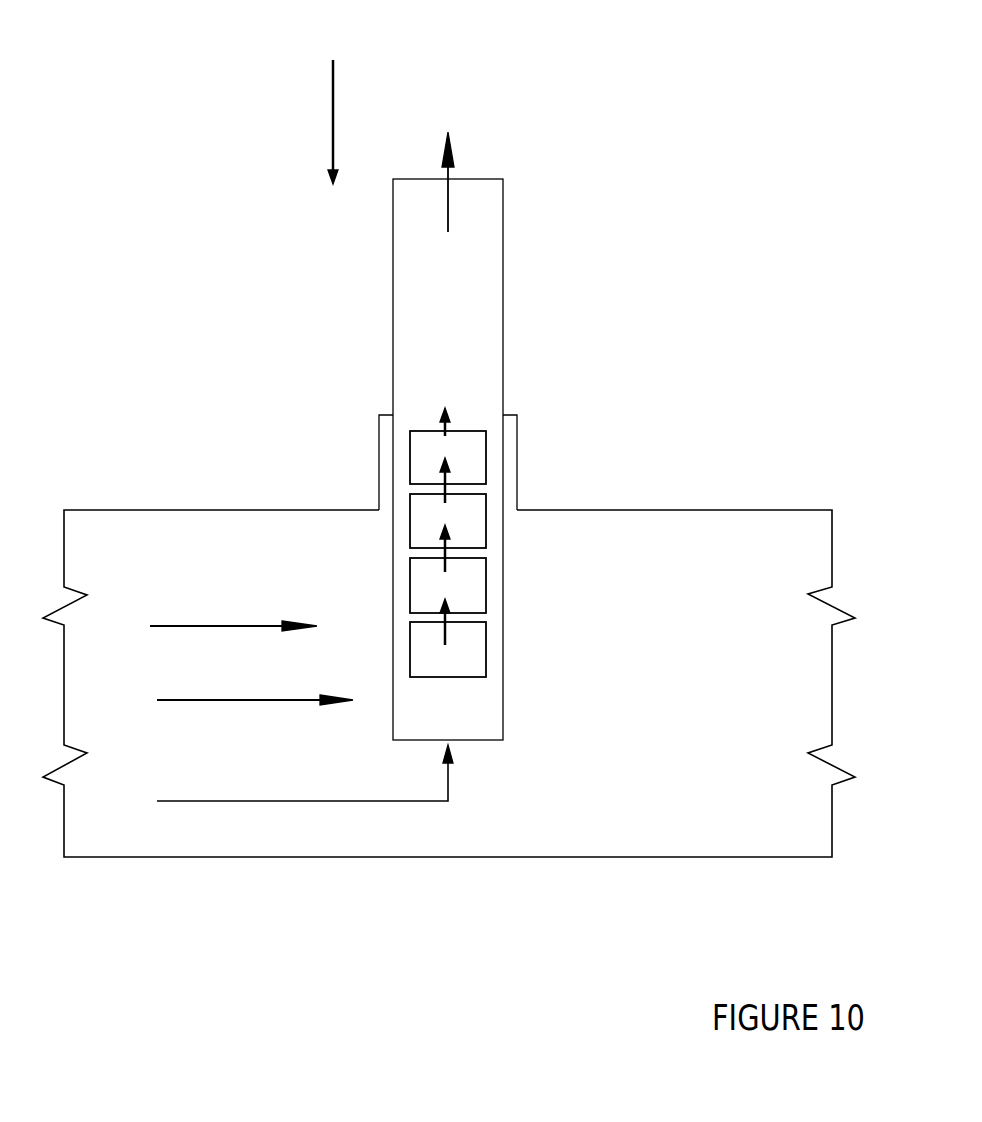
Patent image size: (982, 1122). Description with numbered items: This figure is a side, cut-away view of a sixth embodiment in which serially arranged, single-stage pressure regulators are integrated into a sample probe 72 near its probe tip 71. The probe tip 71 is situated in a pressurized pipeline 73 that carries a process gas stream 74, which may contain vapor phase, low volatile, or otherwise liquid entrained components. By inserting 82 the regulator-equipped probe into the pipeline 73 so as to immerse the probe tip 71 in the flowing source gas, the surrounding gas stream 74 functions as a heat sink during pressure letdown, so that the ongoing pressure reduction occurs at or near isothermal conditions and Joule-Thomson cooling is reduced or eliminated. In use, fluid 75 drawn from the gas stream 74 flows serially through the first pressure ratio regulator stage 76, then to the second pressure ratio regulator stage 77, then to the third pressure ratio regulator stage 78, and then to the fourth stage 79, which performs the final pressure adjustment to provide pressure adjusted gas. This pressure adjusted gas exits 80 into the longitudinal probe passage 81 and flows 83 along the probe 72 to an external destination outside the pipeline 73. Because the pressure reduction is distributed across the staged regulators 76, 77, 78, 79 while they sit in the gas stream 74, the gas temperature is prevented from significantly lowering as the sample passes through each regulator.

The probe tip 71 is at (503, 730).
The sample probe 72 is at (393, 567).
The pressurized pipeline 73 is at (528, 857).
The process gas stream 74 is at (204, 757).
The fluid 75 is at (307, 801).
The first pressure ratio regulator stage 76 is at (486, 658).
The second pressure ratio regulator stage 77 is at (478, 586).
The third pressure ratio regulator stage 78 is at (486, 530).
The fourth pressure ratio regulator stage 79 is at (478, 452).
The exit of pressure adjusted gas 80 is at (443, 417).
The longitudinal probe passage 81 is at (457, 316).
The insertion of pressure regulator 82 is at (333, 133).
The flow to external destination 83 is at (448, 200).